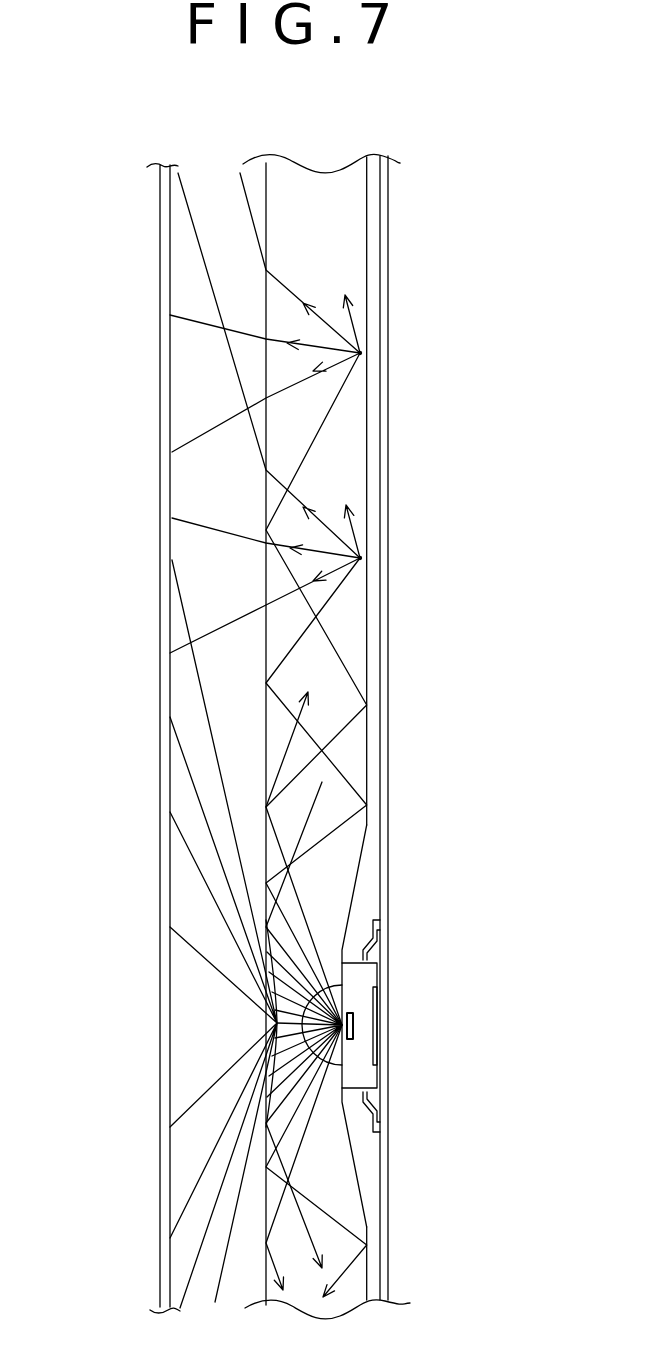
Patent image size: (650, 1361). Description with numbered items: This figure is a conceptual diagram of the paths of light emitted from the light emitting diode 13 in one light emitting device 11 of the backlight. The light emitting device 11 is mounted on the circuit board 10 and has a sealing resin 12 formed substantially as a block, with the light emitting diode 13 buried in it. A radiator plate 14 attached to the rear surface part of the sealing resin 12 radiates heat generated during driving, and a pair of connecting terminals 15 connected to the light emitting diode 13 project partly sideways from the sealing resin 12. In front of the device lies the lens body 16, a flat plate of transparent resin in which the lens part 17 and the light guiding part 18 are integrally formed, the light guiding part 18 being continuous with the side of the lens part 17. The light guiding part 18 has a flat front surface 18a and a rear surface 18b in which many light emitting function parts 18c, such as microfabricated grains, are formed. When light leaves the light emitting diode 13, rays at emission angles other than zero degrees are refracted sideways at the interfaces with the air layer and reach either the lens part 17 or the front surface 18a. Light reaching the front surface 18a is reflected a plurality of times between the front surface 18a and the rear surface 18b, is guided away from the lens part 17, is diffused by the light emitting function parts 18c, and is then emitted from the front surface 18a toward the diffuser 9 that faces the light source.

The diffuser 9 is at (160, 677).
The circuit board 10 is at (388, 612).
The light emitting device 11 is at (510, 989).
The sealing resin 12 is at (365, 982).
The light emitting diode 13 is at (355, 1028).
The radiator plate 14 is at (378, 1057).
The connecting terminal 15 is at (378, 928).
The lens body 16 is at (511, 769).
The lens part 17 is at (377, 973).
The light guiding part 18 is at (345, 640).
The front surface 18a is at (265, 303).
The rear surface 18b is at (367, 443).
The light emitting function part 18c is at (363, 353).